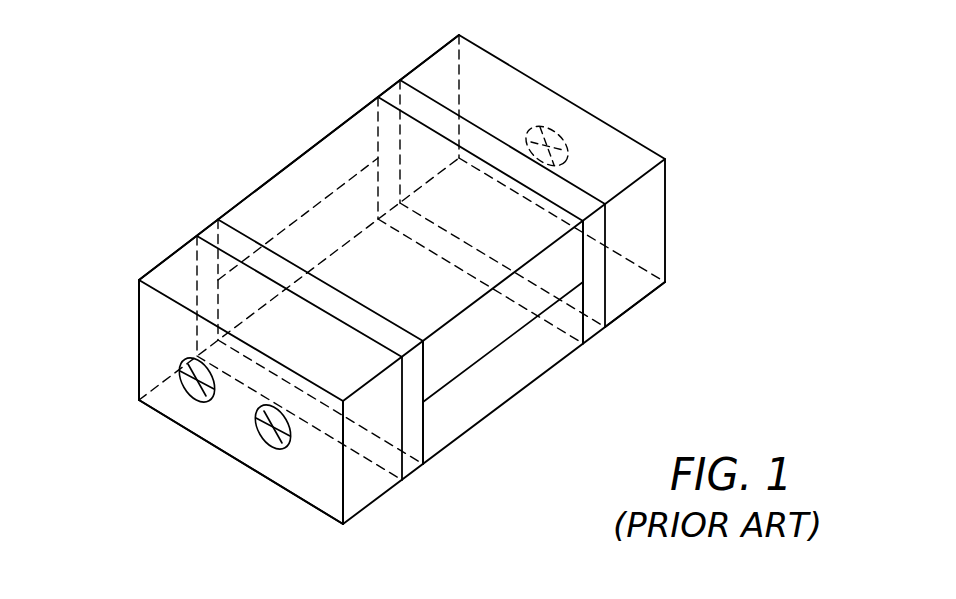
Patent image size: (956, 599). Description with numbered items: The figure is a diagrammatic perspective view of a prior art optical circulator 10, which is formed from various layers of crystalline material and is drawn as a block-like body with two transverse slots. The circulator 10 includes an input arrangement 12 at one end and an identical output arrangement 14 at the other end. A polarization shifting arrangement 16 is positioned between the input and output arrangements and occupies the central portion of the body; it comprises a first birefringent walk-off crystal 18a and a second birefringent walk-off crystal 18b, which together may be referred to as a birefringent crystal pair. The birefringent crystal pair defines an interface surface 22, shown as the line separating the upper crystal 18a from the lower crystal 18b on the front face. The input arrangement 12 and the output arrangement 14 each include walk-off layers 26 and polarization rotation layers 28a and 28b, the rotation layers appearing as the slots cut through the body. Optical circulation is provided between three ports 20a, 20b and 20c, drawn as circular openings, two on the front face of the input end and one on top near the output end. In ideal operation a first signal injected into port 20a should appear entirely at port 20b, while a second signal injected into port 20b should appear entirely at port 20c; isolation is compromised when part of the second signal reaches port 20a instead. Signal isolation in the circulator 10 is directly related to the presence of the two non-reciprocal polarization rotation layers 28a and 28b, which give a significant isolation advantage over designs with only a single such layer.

The optical circulator 10 is at (565, 80).
The input arrangement 12 is at (425, 465).
The output arrangement 14 is at (585, 340).
The polarization shifting arrangement 16 is at (455, 485).
The first birefringent walk-off crystal 18a is at (507, 336).
The second birefringent walk-off crystal 18b is at (515, 387).
The port 20a is at (195, 398).
The port 20b is at (567, 152).
The port 20c is at (270, 447).
The interface surface 22 is at (447, 383).
The walk-off layers 26 is at (165, 258).
The polarization rotation layer 28a is at (210, 218).
The polarization rotation layer 28b is at (396, 96).